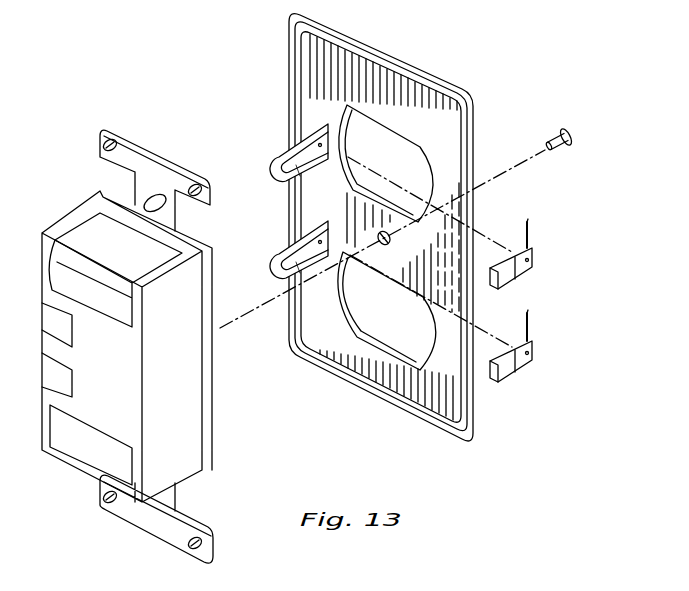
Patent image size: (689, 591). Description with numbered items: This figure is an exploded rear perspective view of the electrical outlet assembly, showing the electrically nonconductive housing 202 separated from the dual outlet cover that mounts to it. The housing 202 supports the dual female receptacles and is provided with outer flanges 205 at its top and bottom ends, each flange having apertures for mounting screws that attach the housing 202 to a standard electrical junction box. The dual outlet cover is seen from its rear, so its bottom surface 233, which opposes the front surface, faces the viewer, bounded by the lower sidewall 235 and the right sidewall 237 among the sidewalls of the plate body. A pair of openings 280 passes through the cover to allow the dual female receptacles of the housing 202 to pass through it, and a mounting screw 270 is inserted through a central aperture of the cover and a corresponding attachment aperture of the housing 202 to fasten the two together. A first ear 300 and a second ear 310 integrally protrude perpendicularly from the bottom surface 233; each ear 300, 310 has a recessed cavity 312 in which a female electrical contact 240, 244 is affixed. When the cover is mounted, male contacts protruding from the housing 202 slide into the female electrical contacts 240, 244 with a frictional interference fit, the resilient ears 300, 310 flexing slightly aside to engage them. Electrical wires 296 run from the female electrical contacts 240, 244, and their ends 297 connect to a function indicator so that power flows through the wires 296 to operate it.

The nonconductive housing 202 is at (72, 217).
The outer flanges 205 is at (118, 128).
The bottom surface 233 is at (320, 73).
The lower sidewall 235 is at (47, 0).
The right sidewall 237 is at (476, 137).
The female electrical contact 240 is at (507, 278).
The female electrical contact 244 is at (507, 382).
The mounting screw 270 is at (567, 146).
The pair of openings 280 is at (393, 147).
The electrical wires 296 is at (529, 241).
The ends 297 is at (528, 222).
The first ear 300 is at (283, 146).
The second ear 310 is at (290, 249).
The recessed cavity 312 is at (296, 181).